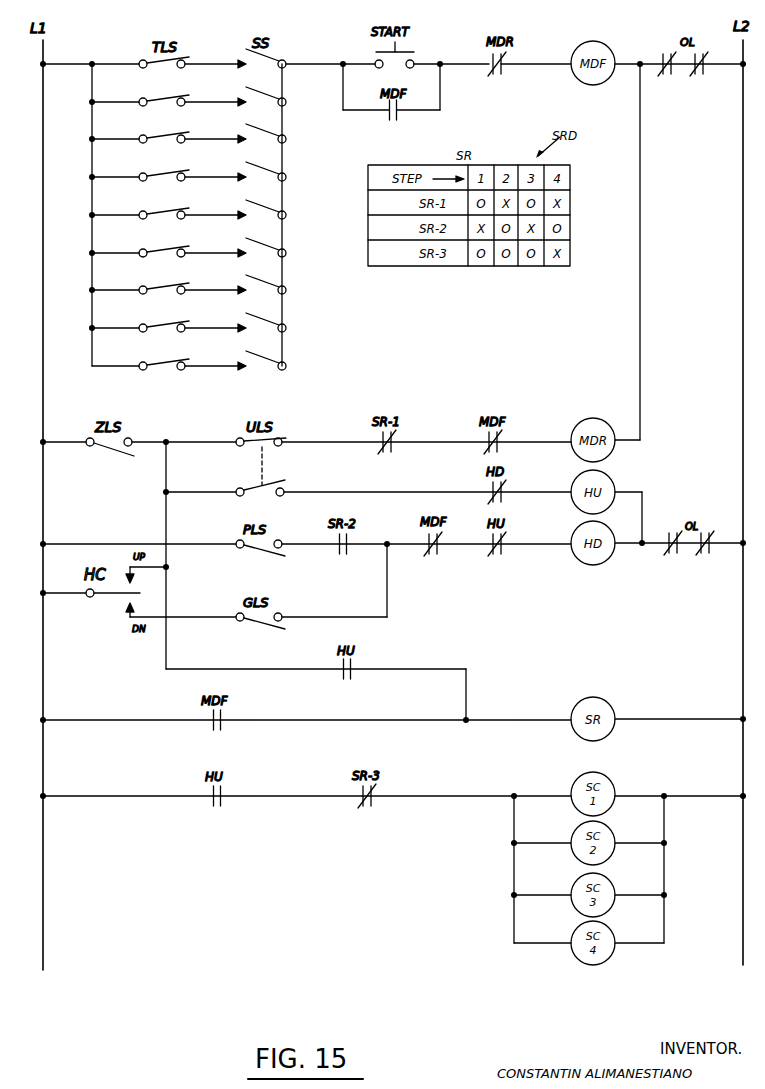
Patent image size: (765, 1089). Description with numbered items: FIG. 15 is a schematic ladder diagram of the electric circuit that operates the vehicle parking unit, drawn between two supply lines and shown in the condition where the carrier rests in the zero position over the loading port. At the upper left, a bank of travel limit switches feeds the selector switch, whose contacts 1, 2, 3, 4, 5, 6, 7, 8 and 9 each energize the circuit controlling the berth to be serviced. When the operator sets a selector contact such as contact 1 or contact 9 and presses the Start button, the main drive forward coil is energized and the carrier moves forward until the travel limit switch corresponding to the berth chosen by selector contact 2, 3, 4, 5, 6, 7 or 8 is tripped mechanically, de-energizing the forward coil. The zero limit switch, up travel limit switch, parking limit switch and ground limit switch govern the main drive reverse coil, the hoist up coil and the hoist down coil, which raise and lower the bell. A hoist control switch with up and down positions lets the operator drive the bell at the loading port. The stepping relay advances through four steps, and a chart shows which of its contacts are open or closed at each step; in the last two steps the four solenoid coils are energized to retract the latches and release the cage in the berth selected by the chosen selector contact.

The selector switch contact 1 is at (270, 58).
The selector switch contact 2 is at (270, 96).
The selector switch contact 3 is at (270, 133).
The selector switch contact 4 is at (270, 171).
The selector switch contact 5 is at (270, 209).
The selector switch contact 6 is at (270, 247).
The selector switch contact 7 is at (271, 284).
The selector switch contact 8 is at (270, 322).
The selector switch contact 9 is at (270, 360).